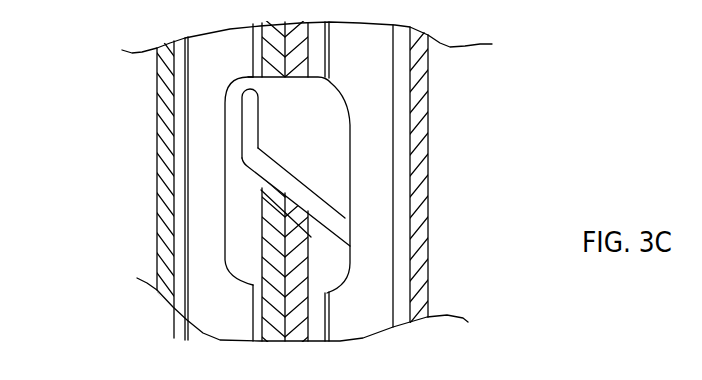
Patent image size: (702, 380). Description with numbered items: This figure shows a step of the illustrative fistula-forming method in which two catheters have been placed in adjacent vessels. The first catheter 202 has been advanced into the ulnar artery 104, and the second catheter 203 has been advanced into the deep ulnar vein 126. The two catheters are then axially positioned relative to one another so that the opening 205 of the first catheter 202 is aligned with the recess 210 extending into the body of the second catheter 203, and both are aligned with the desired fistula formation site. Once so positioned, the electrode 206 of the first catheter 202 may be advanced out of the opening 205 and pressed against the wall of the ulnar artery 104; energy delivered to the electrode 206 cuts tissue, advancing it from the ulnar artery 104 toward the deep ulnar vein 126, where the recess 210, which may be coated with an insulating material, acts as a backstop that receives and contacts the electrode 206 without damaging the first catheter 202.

The ulnar artery 104 is at (428, 112).
The deep ulnar vein 126 is at (158, 185).
The first catheter 202 is at (375, 57).
The second catheter 203 is at (205, 110).
The opening 205 is at (343, 188).
The electrode 206 is at (317, 208).
The recess 210 is at (247, 183).